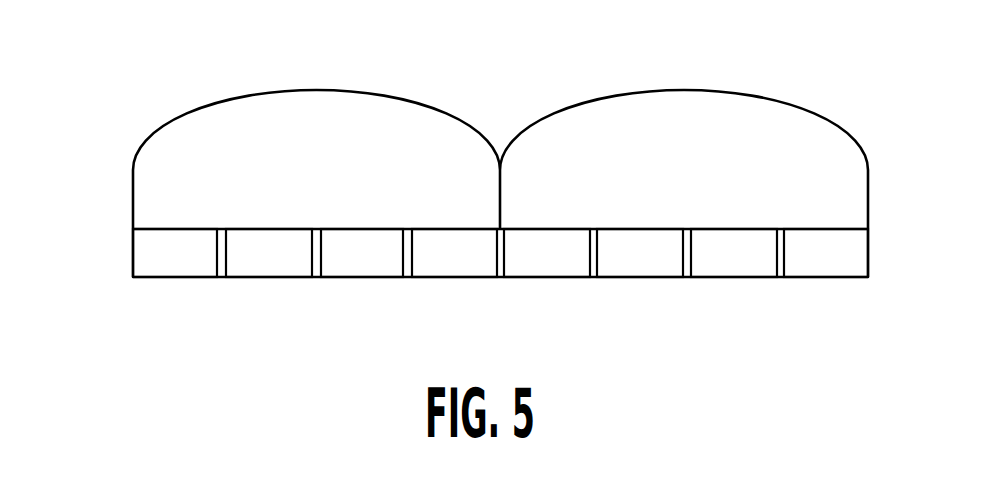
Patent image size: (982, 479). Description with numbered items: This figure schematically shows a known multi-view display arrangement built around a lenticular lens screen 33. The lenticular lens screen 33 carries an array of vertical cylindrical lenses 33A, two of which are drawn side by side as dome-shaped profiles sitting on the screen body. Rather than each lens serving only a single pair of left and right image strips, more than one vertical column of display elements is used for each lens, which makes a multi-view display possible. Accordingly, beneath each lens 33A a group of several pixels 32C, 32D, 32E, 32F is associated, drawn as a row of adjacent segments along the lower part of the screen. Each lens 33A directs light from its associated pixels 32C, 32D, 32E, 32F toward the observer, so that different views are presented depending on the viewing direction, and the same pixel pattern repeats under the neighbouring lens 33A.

The lenticular lens screen 33 is at (116, 240).
The vertical cylindrical lens 33A is at (250, 95).
The pixel 32C is at (177, 277).
The pixel 32D is at (252, 277).
The pixel 32E is at (343, 277).
The pixel 32F is at (442, 277).